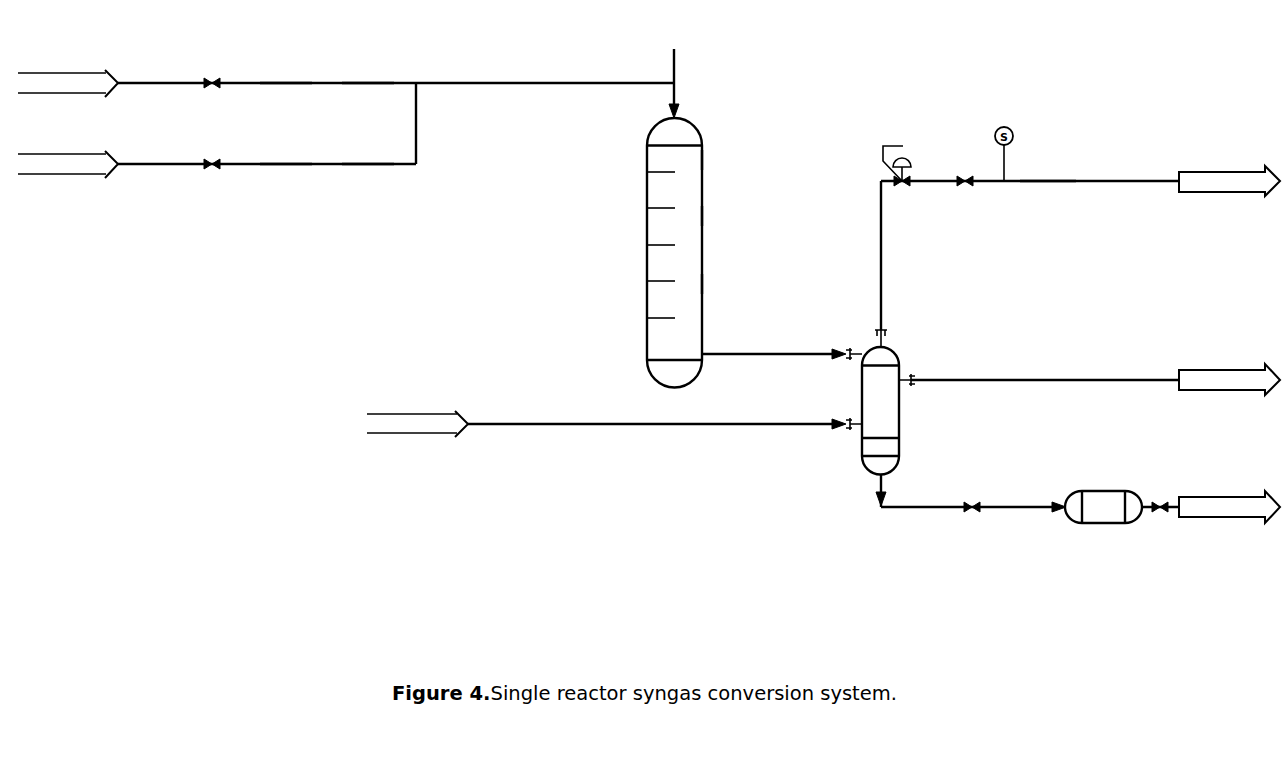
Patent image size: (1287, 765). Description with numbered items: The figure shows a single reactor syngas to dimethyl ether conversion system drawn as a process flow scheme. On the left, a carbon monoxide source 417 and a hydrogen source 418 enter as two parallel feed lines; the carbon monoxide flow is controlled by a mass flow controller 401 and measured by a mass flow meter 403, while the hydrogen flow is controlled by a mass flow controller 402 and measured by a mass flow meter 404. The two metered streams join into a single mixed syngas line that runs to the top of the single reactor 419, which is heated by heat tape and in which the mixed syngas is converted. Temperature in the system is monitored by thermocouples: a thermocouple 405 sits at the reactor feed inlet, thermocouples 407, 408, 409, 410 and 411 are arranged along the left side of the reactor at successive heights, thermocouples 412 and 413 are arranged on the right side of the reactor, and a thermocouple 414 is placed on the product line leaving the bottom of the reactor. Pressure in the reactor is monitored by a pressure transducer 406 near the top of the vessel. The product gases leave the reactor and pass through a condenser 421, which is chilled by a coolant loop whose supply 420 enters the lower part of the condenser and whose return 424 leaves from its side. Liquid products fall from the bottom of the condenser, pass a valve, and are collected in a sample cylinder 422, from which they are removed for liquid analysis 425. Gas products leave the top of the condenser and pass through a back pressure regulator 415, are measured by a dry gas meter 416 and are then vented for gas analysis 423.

The mass flow controller 401 is at (286, 83).
The mass flow controller 402 is at (286, 164).
The mass flow meter 403 is at (368, 83).
The mass flow meter 404 is at (368, 164).
The thermocouple 405 is at (674, 64).
The pressure transducer 406 is at (702, 160).
The thermocouple 407 is at (647, 172).
The thermocouple 408 is at (647, 208).
The thermocouple 409 is at (647, 245).
The thermocouple 410 is at (647, 281).
The thermocouple 411 is at (647, 318).
The thermocouple 412 is at (702, 216).
The thermocouple 413 is at (702, 284).
The thermocouple 414 is at (810, 354).
The back pressure regulator 415 is at (903, 183).
The dry gas meter 416 is at (1048, 181).
The carbon monoxide source 417 is at (47, 65).
The hydrogen source 418 is at (47, 149).
The single reactor 419 is at (525, 239).
The coolant loop 420 is at (400, 409).
The condenser 421 is at (930, 414).
The sample cylinder 422 is at (1083, 551).
The gas analysis vent 423 is at (1202, 161).
The coolant loop 424 is at (1202, 366).
The liquid analysis outlet 425 is at (1212, 496).